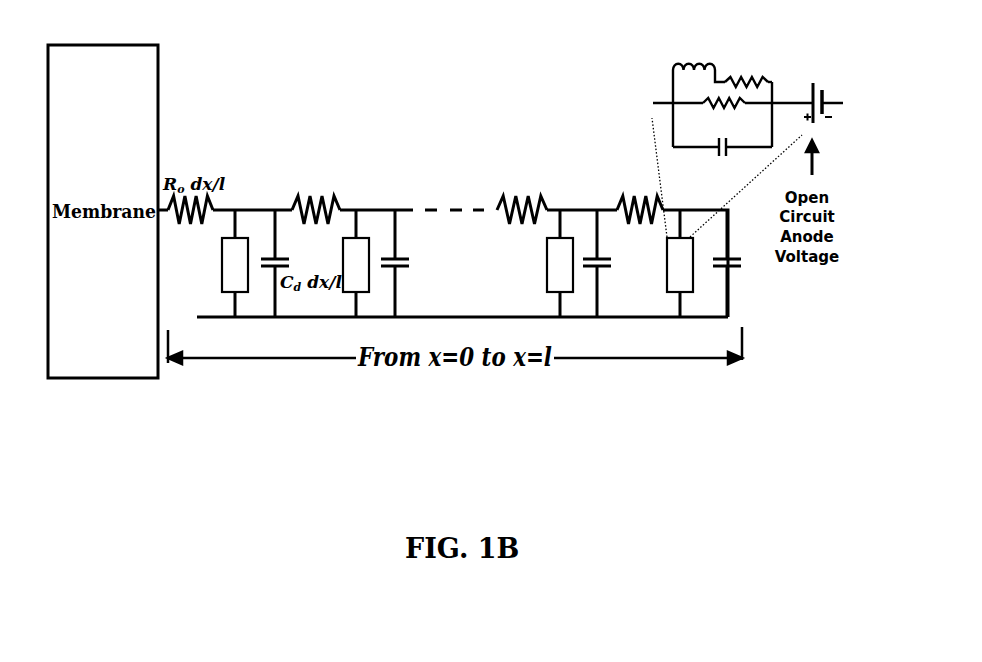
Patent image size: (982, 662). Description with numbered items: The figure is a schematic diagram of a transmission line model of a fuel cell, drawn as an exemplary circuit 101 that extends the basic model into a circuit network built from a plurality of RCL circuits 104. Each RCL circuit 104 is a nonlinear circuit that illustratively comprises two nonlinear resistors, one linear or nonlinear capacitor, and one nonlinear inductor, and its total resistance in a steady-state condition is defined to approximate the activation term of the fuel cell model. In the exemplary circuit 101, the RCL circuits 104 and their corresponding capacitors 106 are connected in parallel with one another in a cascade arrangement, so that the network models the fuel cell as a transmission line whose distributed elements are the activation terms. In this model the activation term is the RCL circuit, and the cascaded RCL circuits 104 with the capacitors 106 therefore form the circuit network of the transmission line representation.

The exemplary circuit 101 is at (697, 12).
The RCL circuit 104 is at (244, 238).
The capacitor 106 is at (278, 254).